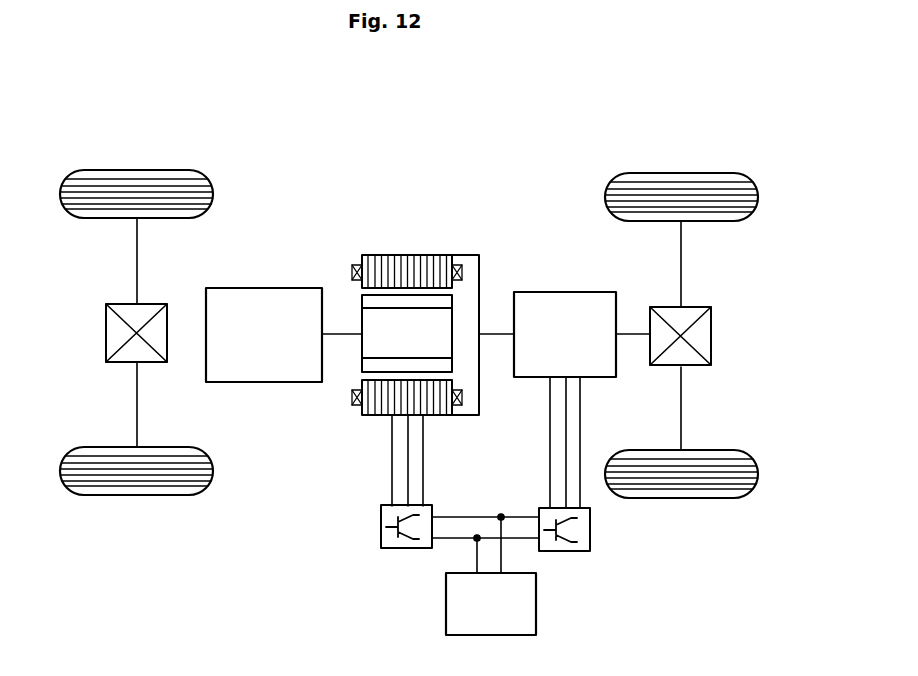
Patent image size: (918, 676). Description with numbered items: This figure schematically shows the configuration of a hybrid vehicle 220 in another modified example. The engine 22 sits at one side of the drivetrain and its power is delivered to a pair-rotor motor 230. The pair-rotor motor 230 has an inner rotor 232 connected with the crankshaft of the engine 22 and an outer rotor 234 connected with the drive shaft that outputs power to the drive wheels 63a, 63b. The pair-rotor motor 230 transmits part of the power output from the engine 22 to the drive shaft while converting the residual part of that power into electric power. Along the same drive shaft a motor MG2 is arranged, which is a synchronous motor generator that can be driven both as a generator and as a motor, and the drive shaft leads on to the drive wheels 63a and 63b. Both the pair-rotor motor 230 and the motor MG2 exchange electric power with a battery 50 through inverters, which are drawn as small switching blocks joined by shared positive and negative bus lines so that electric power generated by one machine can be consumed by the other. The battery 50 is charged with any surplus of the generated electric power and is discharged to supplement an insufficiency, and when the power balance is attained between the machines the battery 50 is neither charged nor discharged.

The engine 22 is at (262, 382).
The hybrid vehicle 220 is at (505, 180).
The pair-rotor motor 230 is at (401, 282).
The inner rotor 232 is at (362, 318).
The outer rotor 234 is at (405, 256).
The motor MG2 is at (565, 292).
The drive wheel 63a is at (682, 173).
The drive wheel 63b is at (680, 498).
The battery 50 is at (536, 599).